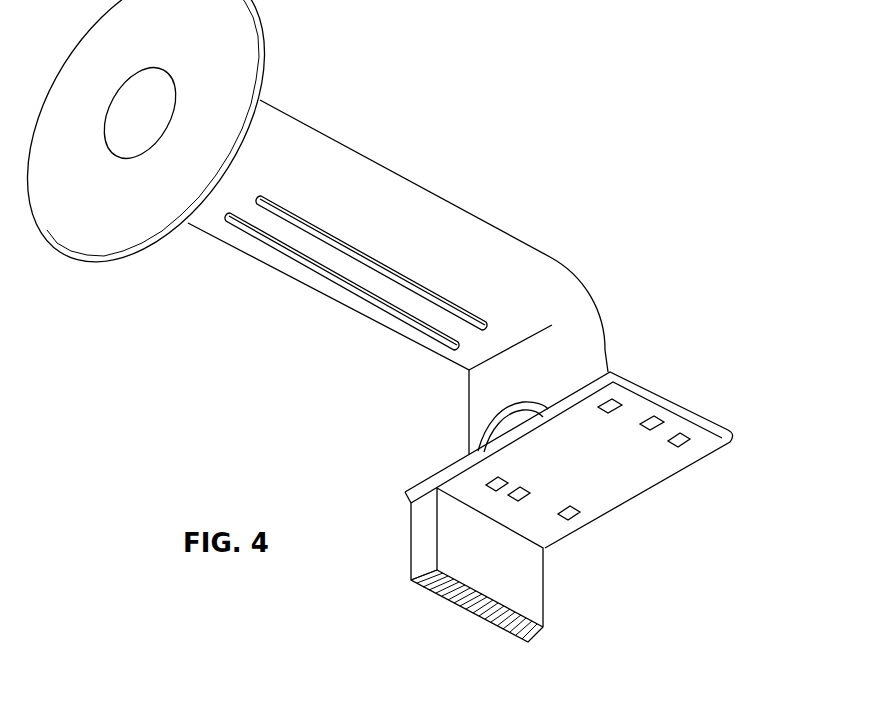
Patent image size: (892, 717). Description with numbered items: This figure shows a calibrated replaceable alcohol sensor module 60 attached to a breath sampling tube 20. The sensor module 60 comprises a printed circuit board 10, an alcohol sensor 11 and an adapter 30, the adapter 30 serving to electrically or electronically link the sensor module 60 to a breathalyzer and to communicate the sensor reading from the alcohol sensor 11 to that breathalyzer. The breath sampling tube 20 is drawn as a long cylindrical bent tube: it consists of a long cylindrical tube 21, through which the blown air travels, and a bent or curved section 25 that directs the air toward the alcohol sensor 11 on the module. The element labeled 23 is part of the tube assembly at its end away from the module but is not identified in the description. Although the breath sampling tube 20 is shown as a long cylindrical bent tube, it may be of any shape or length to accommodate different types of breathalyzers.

The printed circuit board 10 is at (698, 419).
The alcohol sensor 11 is at (500, 428).
The breath sampling tube 20 is at (550, 258).
The long cylindrical tube 21 is at (412, 202).
The disc-shaped end 23 is at (60, 232).
The bent or curved section 25 is at (593, 340).
The adapter 30 is at (530, 587).
The sensor module 60 is at (589, 507).